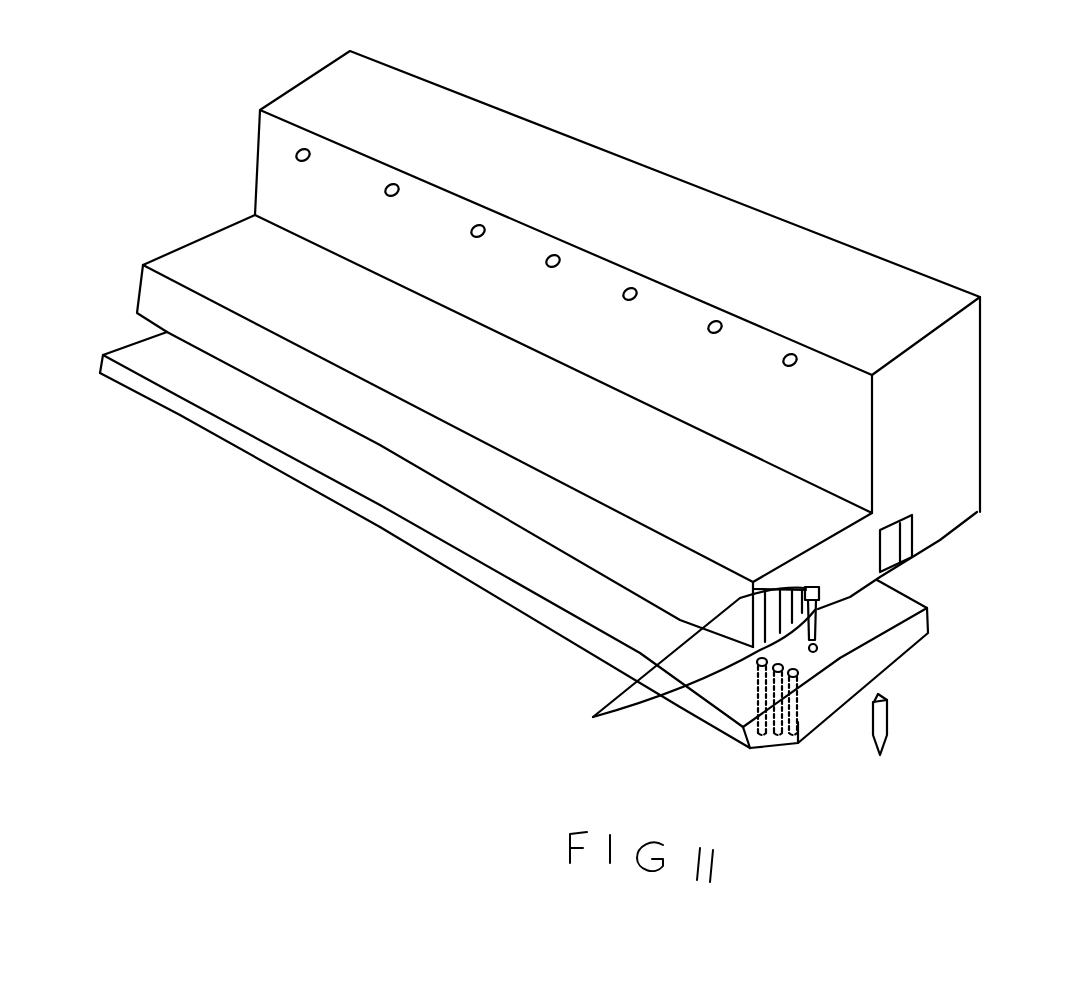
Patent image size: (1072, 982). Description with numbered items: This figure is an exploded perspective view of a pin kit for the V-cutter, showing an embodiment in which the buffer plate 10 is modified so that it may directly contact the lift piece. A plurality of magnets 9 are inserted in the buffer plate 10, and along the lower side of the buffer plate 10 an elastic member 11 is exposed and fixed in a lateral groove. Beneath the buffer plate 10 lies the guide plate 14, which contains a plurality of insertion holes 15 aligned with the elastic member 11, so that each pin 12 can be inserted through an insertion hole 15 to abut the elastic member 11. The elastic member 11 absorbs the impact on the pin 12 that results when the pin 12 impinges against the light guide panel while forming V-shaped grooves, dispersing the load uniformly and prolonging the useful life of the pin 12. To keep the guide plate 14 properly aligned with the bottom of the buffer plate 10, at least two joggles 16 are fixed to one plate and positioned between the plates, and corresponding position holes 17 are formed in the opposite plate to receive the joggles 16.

The magnet 9 is at (915, 553).
The buffer plate 10 is at (572, 437).
The elastic member 11 is at (684, 663).
The pin 12 is at (887, 737).
The guide plate 14 is at (556, 612).
The insertion hole 15 is at (758, 660).
The joggle 16 is at (928, 608).
The position hole 17 is at (818, 650).